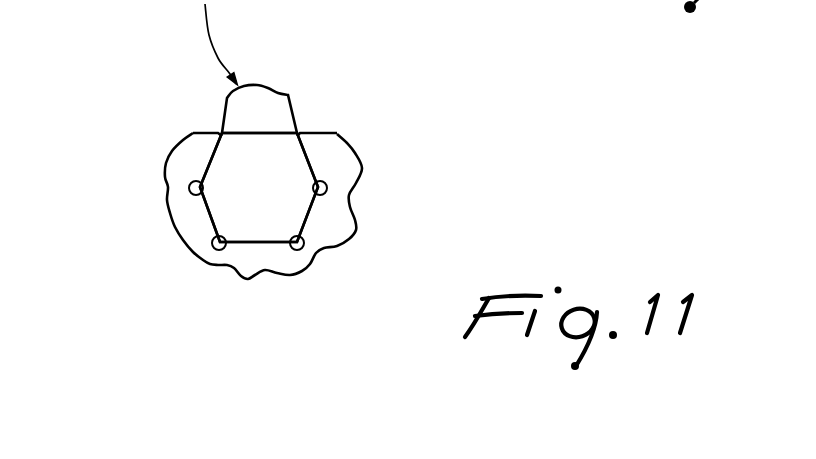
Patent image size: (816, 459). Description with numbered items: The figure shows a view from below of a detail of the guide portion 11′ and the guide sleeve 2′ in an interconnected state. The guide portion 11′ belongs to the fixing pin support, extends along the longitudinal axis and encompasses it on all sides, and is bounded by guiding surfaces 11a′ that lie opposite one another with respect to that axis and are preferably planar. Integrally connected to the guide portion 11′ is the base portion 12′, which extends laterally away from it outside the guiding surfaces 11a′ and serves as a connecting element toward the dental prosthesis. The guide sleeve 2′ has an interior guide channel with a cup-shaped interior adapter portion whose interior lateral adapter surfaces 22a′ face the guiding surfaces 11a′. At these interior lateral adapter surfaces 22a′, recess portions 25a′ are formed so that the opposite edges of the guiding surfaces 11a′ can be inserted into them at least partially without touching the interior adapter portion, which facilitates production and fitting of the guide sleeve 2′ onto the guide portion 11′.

The guide sleeve 2′ is at (173, 141).
The base portion 12′ is at (268, 110).
The guide portion 11′ is at (285, 172).
The guiding surface 11a′ is at (208, 212).
The recess portion 25a′ is at (193, 188).
The interior lateral adapter surface 22a′ is at (221, 246).